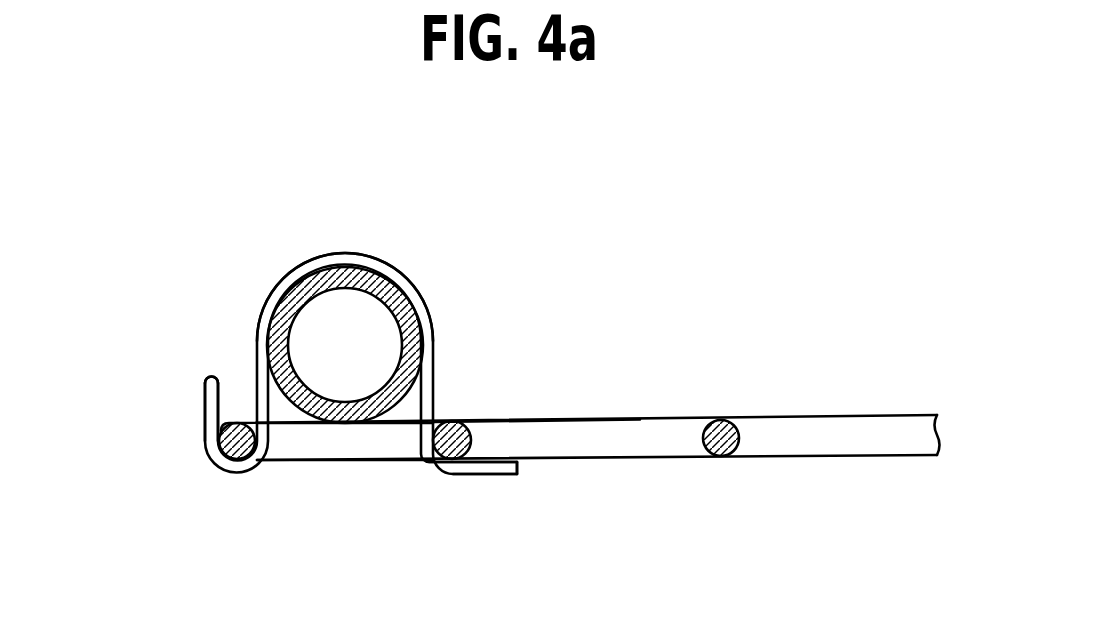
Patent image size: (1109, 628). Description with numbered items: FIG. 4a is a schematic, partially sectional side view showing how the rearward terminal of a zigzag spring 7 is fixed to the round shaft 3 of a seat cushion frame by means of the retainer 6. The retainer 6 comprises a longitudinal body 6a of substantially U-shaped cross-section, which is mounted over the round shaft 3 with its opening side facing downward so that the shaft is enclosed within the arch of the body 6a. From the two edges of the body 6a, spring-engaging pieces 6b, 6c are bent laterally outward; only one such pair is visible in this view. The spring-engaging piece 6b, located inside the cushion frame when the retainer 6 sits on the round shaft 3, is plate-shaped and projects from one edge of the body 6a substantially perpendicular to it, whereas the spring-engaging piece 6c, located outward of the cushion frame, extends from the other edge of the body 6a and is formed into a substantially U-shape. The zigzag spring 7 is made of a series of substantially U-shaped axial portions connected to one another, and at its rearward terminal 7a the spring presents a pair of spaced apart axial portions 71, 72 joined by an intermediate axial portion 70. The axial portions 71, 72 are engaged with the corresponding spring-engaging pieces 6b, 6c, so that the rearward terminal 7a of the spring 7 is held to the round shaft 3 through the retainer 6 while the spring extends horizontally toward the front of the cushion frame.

The round shaft 3 is at (300, 316).
The retainer 6 is at (358, 248).
The body 6a is at (419, 288).
The spring-engaging piece 6b is at (480, 475).
The spring-engaging piece 6c is at (204, 393).
The zigzag spring 7 is at (665, 414).
The rearward terminal 7a is at (453, 411).
The intermediate axial portion 70 is at (310, 452).
The axial portion 71 is at (440, 453).
The axial portion 72 is at (233, 458).